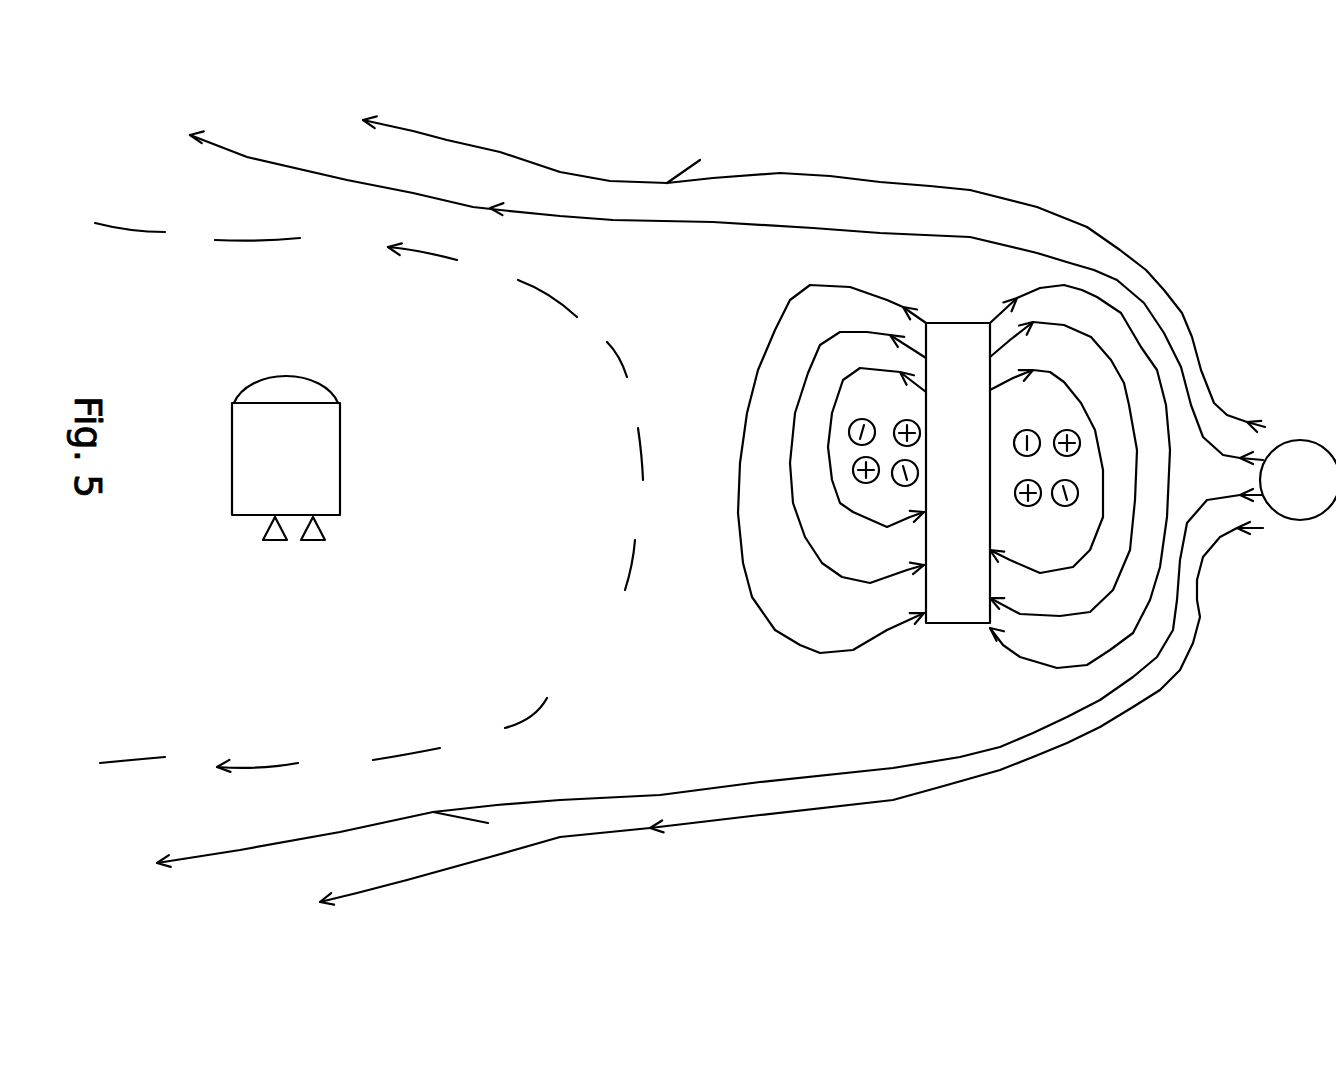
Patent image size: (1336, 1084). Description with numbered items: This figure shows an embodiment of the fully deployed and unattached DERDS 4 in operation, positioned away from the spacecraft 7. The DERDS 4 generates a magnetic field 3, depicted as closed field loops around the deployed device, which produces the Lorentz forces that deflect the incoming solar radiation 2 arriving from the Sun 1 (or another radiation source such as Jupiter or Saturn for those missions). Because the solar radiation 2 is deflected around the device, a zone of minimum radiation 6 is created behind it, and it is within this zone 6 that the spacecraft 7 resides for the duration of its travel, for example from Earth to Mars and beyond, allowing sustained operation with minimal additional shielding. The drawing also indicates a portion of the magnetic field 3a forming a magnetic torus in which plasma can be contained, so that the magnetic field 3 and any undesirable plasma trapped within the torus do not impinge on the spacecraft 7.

The Sun 1 is at (1303, 520).
The solar radiation 2 is at (1087, 227).
The magnetic field 3 is at (825, 653).
The field lines 3a is at (1063, 507).
The DERDS 4 is at (960, 623).
The zone of minimum radiation 6 is at (588, 663).
The spacecraft 7 is at (232, 515).